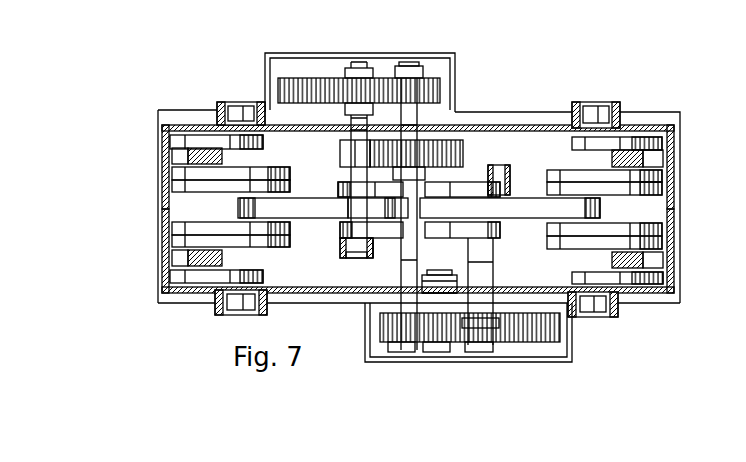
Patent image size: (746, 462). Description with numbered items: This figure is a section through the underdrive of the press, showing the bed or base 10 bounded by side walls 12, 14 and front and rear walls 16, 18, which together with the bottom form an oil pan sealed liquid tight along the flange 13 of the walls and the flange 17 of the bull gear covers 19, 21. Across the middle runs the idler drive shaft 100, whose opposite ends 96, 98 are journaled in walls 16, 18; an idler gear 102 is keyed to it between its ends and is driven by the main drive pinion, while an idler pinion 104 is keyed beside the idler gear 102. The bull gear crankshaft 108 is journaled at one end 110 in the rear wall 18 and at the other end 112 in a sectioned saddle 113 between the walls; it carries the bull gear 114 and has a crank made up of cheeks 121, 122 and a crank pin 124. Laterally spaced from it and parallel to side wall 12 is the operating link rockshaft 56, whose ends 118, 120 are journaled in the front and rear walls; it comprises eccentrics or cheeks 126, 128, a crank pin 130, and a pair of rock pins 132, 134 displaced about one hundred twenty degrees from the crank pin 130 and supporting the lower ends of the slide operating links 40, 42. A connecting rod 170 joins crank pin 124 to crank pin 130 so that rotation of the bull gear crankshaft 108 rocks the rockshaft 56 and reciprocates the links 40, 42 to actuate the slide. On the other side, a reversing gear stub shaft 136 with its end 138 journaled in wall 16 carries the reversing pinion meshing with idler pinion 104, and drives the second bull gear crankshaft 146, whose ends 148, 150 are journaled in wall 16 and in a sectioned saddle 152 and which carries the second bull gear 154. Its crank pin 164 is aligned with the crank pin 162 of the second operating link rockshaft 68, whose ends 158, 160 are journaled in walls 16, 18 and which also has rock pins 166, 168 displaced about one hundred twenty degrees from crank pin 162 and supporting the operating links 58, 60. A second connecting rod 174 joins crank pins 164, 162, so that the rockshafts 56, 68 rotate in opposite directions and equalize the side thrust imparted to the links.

The bed or base 10 is at (486, 108).
The side wall 12 is at (162, 207).
The flange 13 is at (660, 116).
The side wall 14 is at (680, 205).
The front wall 16 is at (317, 297).
The flange 17 is at (331, 60).
The rear wall 18 is at (540, 125).
The bull gear cover 19 is at (512, 357).
The bull gear cover 21 is at (308, 56).
The slide operating link 40 is at (222, 257).
The slide operating link 42 is at (182, 160).
The operating link rockshaft 56 is at (243, 172).
The operating link 58 is at (612, 258).
The operating link 60 is at (612, 158).
The operating link rockshaft 68 is at (638, 234).
The end of idler drive shaft 96 is at (401, 352).
The end of idler drive shaft 98 is at (413, 66).
The idler drive shaft 100 is at (420, 266).
The idler gear 102 is at (465, 156).
The idler pinion 104 is at (380, 326).
The bull gear crankshaft 108 is at (352, 176).
The end of bull gear crankshaft 110 is at (348, 113).
The end of bull gear crankshaft 112 is at (352, 259).
The saddle 113 is at (340, 247).
The bull gear 114 is at (380, 70).
The end of operating link rockshaft 118 is at (244, 315).
The end of operating link rockshaft 120 is at (241, 103).
The cheek 121 is at (380, 258).
The cheek 122 is at (432, 172).
The crank pin 124 is at (375, 208).
The eccentric or cheek 126 is at (275, 240).
The eccentric or cheek 128 is at (300, 172).
The crank pin 130 is at (240, 208).
The rock pin 132 is at (172, 262).
The rock pin 134 is at (175, 160).
The reversing gear stub shaft 136 is at (448, 273).
The end of reversing gear stub shaft 138 is at (440, 283).
The second bull gear crankshaft 146 is at (490, 250).
The end of second bull gear crankshaft 148 is at (512, 293).
The end of second bull gear crankshaft 150 is at (498, 170).
The saddle 152 is at (500, 178).
The second bull gear 154 is at (543, 346).
The end of second operating link rockshaft 158 is at (620, 307).
The end of second operating link rockshaft 160 is at (613, 104).
The crank pin 162 is at (606, 208).
The crank pin 164 is at (456, 208).
The rock pin 166 is at (682, 266).
The rock pin 168 is at (680, 155).
The connecting rod 170 is at (326, 200).
The second connecting rod 174 is at (543, 203).